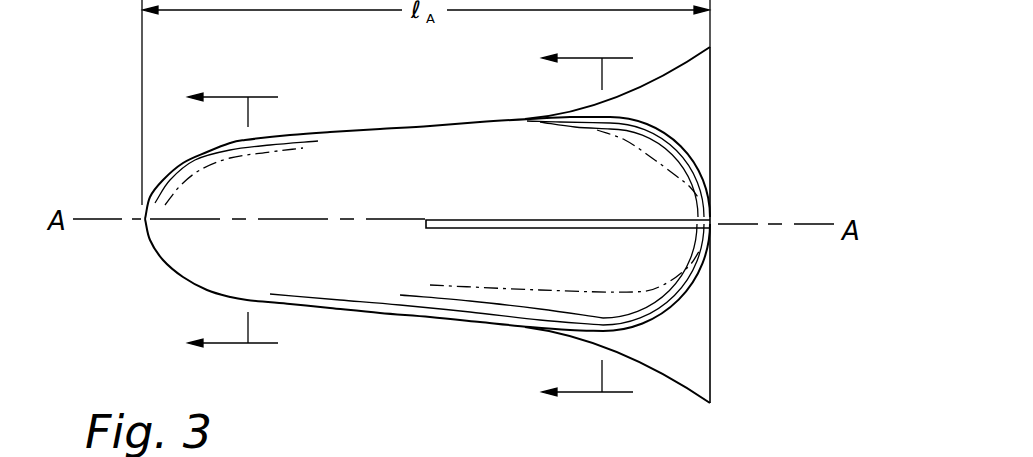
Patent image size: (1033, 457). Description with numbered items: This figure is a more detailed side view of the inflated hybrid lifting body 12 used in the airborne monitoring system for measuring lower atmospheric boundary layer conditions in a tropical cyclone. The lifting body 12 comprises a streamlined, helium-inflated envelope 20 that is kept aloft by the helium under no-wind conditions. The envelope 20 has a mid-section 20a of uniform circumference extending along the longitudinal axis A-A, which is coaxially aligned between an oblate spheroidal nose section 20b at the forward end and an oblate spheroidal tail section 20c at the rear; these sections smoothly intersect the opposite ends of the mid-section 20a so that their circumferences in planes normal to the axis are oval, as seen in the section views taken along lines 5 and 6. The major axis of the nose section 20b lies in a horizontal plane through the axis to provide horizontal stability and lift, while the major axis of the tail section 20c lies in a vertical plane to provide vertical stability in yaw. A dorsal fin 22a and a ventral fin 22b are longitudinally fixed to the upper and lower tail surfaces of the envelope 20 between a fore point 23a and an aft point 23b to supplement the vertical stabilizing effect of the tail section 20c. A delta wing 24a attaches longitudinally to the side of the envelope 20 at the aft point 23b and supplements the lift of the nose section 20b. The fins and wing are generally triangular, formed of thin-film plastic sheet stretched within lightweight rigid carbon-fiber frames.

The hybrid lifting body 12 is at (388, 129).
The envelope 20 is at (322, 312).
The mid-section 20a is at (378, 283).
The nose section 20b is at (177, 242).
The tail section 20c is at (680, 257).
The dorsal fin 22a is at (700, 97).
The ventral fin 22b is at (700, 352).
The fore point 23a is at (478, 120).
The aft point 23b is at (712, 223).
The delta wing 24a is at (435, 229).
The section line 5- 5 is at (220, 221).
The section line 6- 6 is at (574, 226).